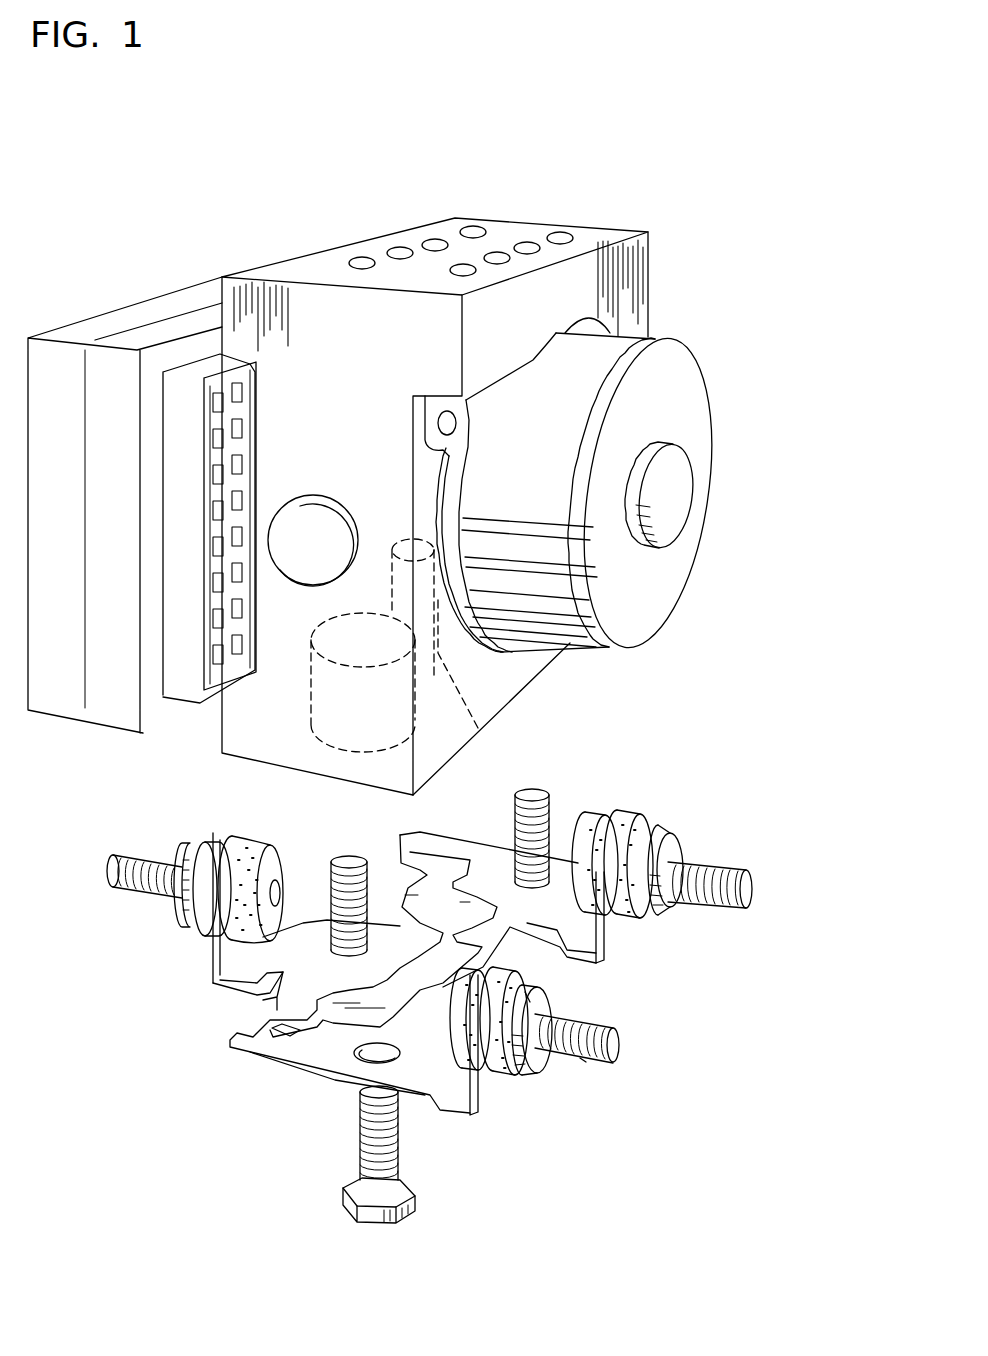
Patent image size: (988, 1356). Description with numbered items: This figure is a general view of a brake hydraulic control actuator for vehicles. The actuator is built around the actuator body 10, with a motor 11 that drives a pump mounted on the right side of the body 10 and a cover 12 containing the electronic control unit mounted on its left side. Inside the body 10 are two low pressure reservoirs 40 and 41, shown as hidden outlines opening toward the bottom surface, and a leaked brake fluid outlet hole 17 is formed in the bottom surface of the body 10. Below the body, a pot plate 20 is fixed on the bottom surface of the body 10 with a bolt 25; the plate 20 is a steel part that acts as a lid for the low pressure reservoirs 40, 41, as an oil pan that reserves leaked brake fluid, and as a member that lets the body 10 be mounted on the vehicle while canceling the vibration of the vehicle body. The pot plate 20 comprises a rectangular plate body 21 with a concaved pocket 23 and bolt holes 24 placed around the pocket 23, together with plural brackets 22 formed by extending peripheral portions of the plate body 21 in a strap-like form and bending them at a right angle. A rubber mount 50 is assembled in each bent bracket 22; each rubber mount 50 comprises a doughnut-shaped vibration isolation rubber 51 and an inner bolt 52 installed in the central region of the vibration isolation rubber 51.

The actuator body 10 is at (592, 234).
The motor 11 is at (673, 357).
The cover 12 is at (117, 322).
The leaked brake fluid outlet hole 17 is at (484, 734).
The pot plate 20 is at (227, 1050).
The plate body 21 is at (260, 997).
The bracket 22 is at (210, 958).
The pocket 23 is at (287, 1033).
The bolt hole 24 is at (360, 1050).
The bolt 25 is at (530, 789).
The low pressure reservoir 40 is at (473, 660).
The low pressure reservoir 41 is at (298, 728).
The rubber mount 50 is at (177, 930).
The vibration isolation rubber 51 is at (525, 996).
The inner bolt 52 is at (578, 1060).